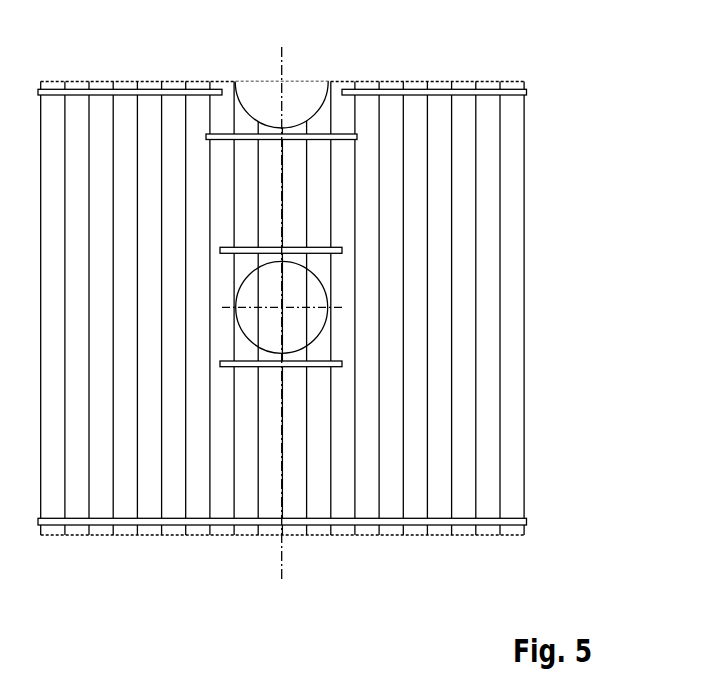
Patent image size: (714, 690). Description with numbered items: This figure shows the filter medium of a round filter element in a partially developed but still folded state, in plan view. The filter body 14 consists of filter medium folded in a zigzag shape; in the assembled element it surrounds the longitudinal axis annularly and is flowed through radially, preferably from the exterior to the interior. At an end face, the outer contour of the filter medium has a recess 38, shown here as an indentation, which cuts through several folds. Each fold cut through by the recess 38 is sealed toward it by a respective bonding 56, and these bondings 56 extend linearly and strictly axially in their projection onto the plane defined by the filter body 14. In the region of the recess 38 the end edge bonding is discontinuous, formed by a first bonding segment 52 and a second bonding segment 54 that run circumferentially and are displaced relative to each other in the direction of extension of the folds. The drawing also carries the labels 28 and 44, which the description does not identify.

The filter body 14 is at (337, 294).
The slats 28 is at (490, 82).
The first bonding segment 52 is at (107, 95).
The recess 38 is at (272, 68).
The recess 44 is at (257, 99).
The second bonding segment 54 is at (318, 137).
The bonding 56 is at (315, 250).